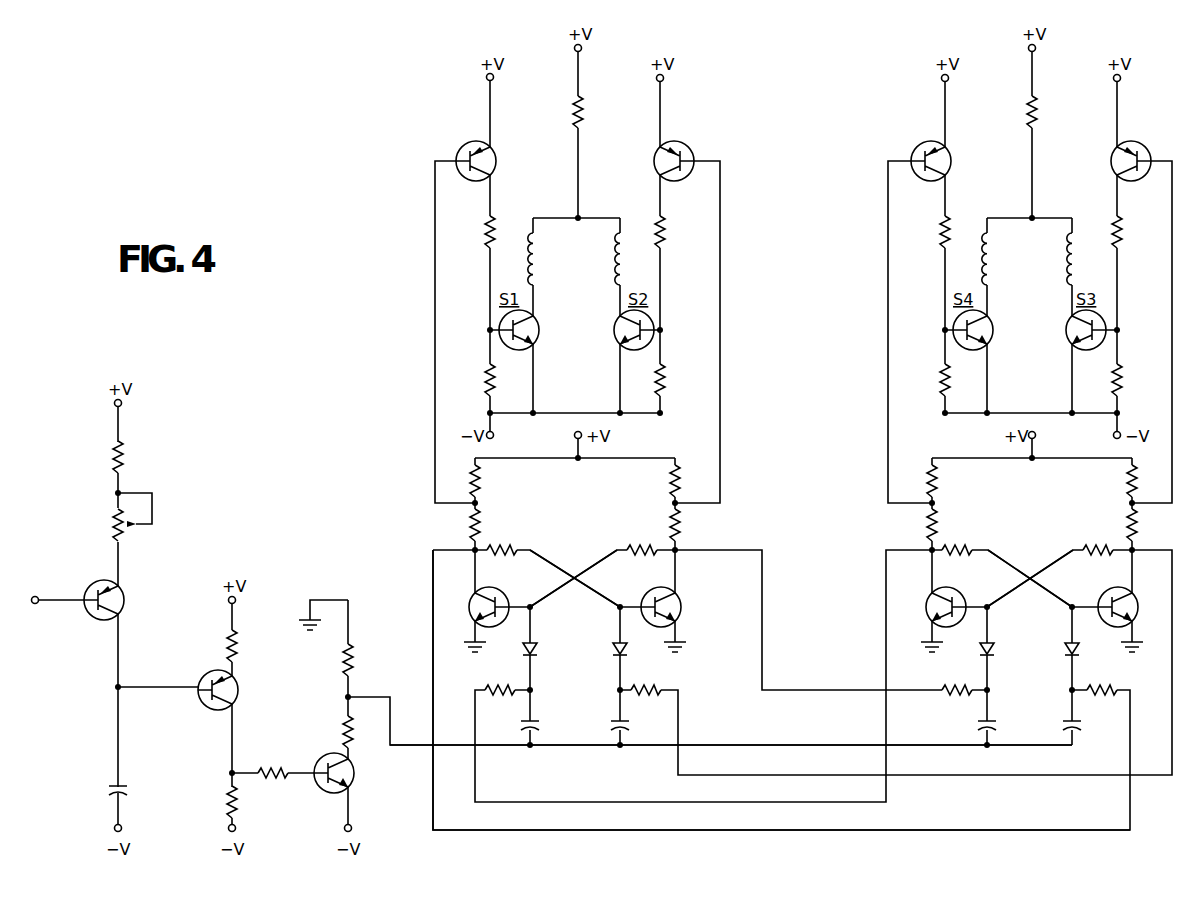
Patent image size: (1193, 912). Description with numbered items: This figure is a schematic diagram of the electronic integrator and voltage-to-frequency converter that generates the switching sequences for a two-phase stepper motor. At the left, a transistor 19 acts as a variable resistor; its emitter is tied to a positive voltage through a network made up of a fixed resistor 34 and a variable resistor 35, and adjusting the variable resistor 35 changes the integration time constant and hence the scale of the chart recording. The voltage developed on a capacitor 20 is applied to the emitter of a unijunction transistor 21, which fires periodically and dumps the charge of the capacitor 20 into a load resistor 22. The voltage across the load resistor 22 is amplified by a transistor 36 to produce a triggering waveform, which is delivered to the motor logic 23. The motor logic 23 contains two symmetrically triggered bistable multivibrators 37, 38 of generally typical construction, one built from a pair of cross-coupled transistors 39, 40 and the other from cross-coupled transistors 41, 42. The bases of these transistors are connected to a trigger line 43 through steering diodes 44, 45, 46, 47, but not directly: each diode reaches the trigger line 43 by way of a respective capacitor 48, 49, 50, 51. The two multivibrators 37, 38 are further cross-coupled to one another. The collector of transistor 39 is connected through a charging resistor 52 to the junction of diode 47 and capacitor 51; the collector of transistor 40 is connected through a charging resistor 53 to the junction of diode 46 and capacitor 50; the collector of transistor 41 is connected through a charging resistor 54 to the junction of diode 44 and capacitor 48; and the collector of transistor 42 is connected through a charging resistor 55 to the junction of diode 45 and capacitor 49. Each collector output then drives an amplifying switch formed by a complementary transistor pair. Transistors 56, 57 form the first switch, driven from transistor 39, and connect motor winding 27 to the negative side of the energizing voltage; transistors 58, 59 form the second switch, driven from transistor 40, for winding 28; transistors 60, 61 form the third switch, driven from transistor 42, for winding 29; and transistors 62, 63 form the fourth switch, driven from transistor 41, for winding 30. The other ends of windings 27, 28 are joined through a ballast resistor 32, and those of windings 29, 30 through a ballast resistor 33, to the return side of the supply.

The transistor 19 is at (119, 592).
The capacitor 20 is at (121, 788).
The unijunction transistor 21 is at (206, 712).
The load resistor 22 is at (237, 802).
The motor logic 23 is at (801, 509).
The winding 27 is at (539, 272).
The winding 28 is at (614, 254).
The winding 29 is at (1066, 254).
The winding 30 is at (991, 271).
The ballast resistor 32 is at (584, 112).
The ballast resistor 33 is at (1038, 112).
The fixed resistor 34 is at (126, 456).
The variable resistor 35 is at (112, 528).
The transistor 36 is at (354, 774).
The bistable multivibrator 37 is at (590, 522).
The bistable multivibrator 38 is at (1030, 522).
The transistor 39 is at (494, 591).
The transistor 40 is at (648, 590).
The transistor 41 is at (947, 593).
The transistor 42 is at (1105, 592).
The trigger line 43 is at (790, 722).
The steering diode 44 is at (537, 649).
The steering diode 45 is at (612, 660).
The steering diode 46 is at (994, 651).
The steering diode 47 is at (1066, 660).
The capacitor 48 is at (534, 722).
The capacitor 49 is at (611, 725).
The capacitor 50 is at (991, 722).
The capacitor 51 is at (1064, 724).
The charging resistor 52 is at (1097, 704).
The charging resistor 53 is at (954, 700).
The charging resistor 54 is at (504, 700).
The charging resistor 55 is at (655, 704).
The transistor 56 is at (493, 158).
The transistor 57 is at (539, 337).
The transistor 58 is at (660, 156).
The transistor 59 is at (610, 352).
The transistor 60 is at (1115, 156).
The transistor 61 is at (1072, 352).
The transistor 62 is at (946, 158).
The transistor 63 is at (991, 337).